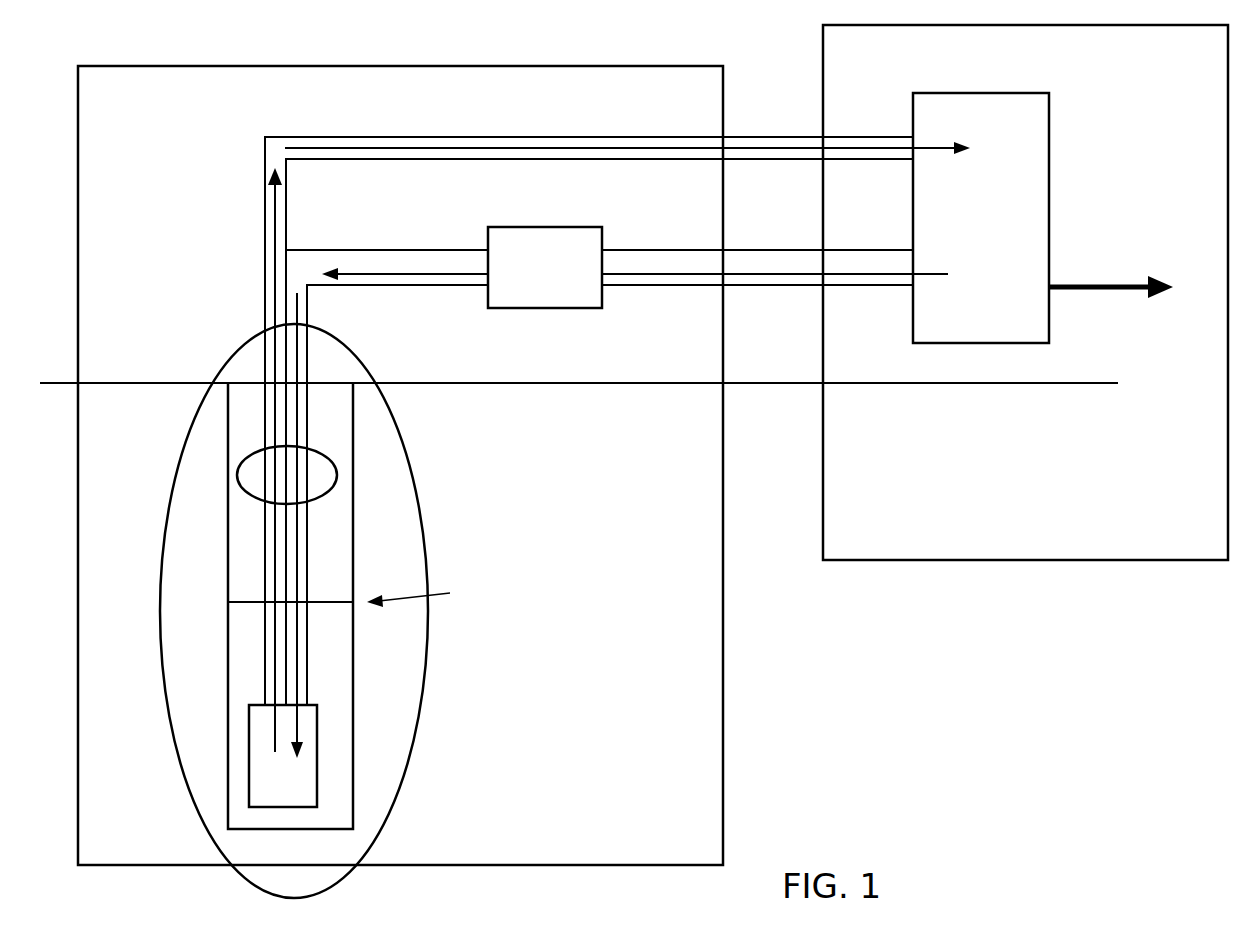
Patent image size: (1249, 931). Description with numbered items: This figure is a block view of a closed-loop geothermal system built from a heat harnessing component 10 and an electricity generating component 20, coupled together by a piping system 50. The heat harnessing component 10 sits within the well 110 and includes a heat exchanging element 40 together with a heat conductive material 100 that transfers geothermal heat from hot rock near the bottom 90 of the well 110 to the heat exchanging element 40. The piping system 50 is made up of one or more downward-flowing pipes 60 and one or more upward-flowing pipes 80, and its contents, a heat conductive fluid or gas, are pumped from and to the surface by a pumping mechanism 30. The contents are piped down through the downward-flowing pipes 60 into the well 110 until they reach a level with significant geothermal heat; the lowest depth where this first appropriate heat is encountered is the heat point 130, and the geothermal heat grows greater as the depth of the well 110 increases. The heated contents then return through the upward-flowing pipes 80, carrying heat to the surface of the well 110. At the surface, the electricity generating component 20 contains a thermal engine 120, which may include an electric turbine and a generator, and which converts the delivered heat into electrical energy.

The heat harnessing component 10 is at (702, 636).
The electricity generating component 20 is at (892, 534).
The pumping mechanism 30 is at (560, 278).
The heat exchanging element 40 is at (298, 793).
The piping system 50 is at (237, 479).
The downward-flowing pipe 60 is at (300, 657).
The upward-flowing pipe 80 is at (275, 418).
The bottom of the well 90 is at (374, 828).
The heat conductive material 100 is at (252, 674).
The well 110 is at (224, 346).
The thermal engine 120 is at (1136, 257).
The heat point 130 is at (228, 608).